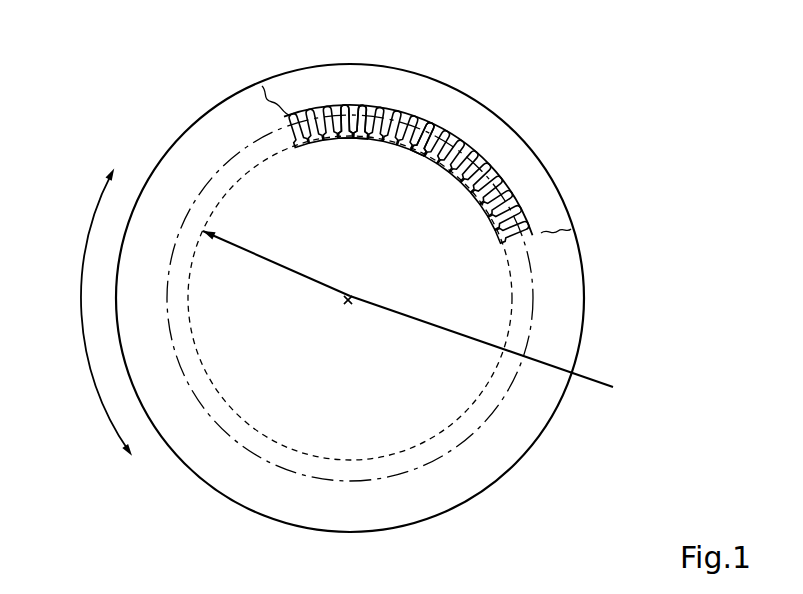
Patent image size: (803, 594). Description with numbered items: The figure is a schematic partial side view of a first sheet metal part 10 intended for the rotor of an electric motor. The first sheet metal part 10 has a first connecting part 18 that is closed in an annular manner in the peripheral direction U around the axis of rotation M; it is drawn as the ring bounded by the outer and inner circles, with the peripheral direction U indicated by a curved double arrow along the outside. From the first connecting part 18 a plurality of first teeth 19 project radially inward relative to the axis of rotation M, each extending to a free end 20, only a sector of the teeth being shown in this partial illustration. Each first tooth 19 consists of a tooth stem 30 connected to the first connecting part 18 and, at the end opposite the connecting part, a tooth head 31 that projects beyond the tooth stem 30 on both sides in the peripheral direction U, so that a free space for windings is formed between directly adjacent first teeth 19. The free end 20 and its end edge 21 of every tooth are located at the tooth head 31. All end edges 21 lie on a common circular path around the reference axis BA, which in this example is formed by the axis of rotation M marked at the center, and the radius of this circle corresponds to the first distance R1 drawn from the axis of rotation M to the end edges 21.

The first sheet metal part 10 is at (565, 108).
The first connecting part 18 is at (513, 160).
The first teeth 19 is at (295, 132).
The free end 20 is at (425, 152).
The end edge 21 is at (470, 190).
The tooth stem 30 is at (357, 137).
The tooth head 31 is at (357, 108).
The first distance R1 is at (268, 260).
The reference axis BA is at (507, 349).
The axis of rotation M is at (348, 300).
The peripheral direction U is at (80, 297).